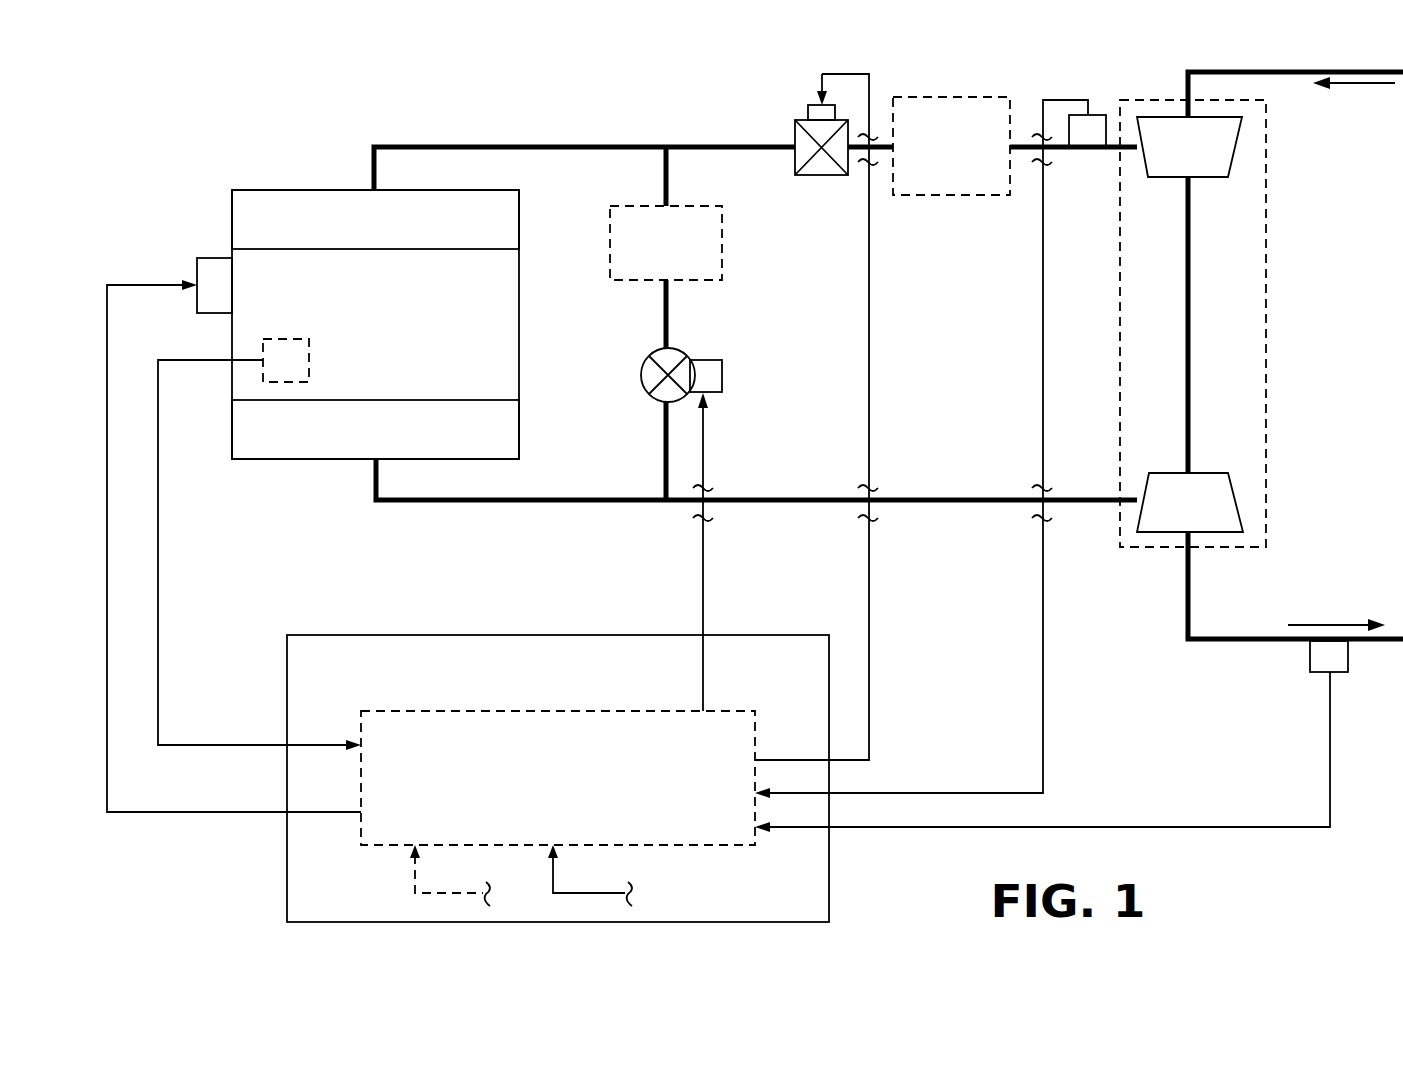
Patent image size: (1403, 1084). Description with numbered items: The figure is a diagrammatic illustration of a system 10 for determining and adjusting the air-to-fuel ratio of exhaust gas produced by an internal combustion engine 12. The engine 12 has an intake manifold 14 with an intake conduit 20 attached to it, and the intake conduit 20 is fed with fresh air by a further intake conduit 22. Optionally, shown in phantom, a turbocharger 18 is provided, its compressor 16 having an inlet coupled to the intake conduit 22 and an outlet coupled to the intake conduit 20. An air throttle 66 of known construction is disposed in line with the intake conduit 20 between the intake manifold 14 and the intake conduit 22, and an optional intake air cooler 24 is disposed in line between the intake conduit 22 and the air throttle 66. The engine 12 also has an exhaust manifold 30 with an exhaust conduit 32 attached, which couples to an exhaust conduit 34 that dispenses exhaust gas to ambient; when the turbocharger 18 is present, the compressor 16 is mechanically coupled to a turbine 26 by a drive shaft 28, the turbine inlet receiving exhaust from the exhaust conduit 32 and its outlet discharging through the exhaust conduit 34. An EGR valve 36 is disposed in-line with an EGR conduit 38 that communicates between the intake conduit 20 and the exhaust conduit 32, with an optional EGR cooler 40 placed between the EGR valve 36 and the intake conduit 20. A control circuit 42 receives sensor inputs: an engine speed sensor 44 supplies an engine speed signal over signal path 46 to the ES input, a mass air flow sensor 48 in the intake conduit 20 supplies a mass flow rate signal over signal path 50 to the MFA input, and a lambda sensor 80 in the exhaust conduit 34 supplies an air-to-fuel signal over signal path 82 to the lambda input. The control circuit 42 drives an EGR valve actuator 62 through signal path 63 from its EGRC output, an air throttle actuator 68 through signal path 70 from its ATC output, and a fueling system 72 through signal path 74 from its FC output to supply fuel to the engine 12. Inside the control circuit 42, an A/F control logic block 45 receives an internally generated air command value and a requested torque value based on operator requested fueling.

The system 10 is at (258, 148).
The internal combustion engine 12 is at (519, 330).
The intake manifold 14 is at (320, 190).
The compressor 16 is at (1205, 177).
The turbocharger 18 is at (1288, 335).
The intake conduit 20 is at (590, 147).
The intake conduit 22 is at (1302, 75).
The intake air cooler 24 is at (950, 196).
The turbine 26 is at (1203, 473).
The drive shaft 28 is at (1186, 305).
The exhaust manifold 30 is at (272, 459).
The exhaust conduit 32 is at (438, 500).
The exhaust conduit 34 is at (1186, 598).
The EGR valve 36 is at (642, 380).
The EGR conduit 38 is at (666, 448).
The EGR cooler 40 is at (722, 232).
The control circuit 42 is at (829, 866).
The engine speed sensor 44 is at (290, 339).
The A/F control logic 45 is at (755, 735).
The signal path 46 is at (158, 570).
The mass air flow sensor 48 is at (1092, 115).
The signal path 50 is at (1043, 352).
The EGR valve actuator 62 is at (722, 378).
The signal path 63 is at (703, 448).
The air throttle 66 is at (822, 176).
The air throttle actuator 68 is at (810, 105).
The signal path 70 is at (870, 335).
The fueling system 72 is at (212, 258).
The signal path 74 is at (160, 812).
The lambda sensor 80 is at (1315, 672).
The signal path 82 is at (1210, 827).